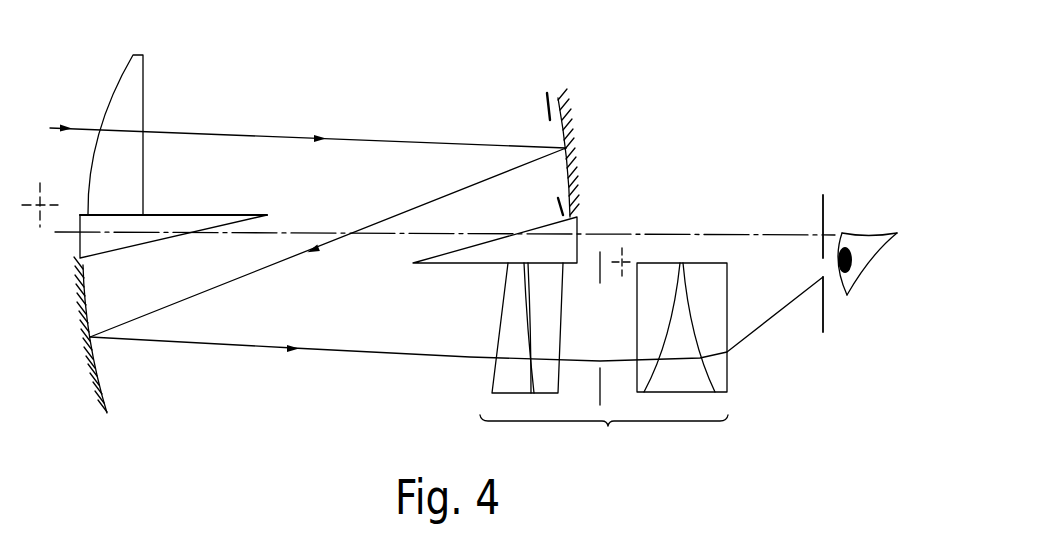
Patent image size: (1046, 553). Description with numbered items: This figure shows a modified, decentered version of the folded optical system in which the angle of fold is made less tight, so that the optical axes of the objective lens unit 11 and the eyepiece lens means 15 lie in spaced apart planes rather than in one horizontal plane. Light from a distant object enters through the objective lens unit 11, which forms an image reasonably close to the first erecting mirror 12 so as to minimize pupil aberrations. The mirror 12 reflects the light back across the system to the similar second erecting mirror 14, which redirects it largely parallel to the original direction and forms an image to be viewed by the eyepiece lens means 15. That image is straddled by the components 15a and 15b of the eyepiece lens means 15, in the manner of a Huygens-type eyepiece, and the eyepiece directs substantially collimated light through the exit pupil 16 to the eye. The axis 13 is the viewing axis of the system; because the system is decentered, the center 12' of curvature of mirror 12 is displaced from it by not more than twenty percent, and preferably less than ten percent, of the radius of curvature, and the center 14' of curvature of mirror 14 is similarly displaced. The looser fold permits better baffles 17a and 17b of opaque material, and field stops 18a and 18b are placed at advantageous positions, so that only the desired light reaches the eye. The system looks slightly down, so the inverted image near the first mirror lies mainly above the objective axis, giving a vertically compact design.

The objective lens unit 11 is at (127, 163).
The center of curvature of mirror 12 12' is at (51, 186).
The first erecting mirror 12 is at (582, 153).
The axis 13 is at (292, 232).
The second erecting mirror 14 is at (73, 335).
The center of curvature of mirror 14 14' is at (654, 231).
The eyepiece lens means 15 is at (604, 436).
The component of the eyepiece lens means 15a is at (555, 298).
The component of the eyepiece lens means 15b is at (720, 298).
The exit pupil 16 is at (820, 218).
The baffle 17a is at (152, 240).
The baffle 17b is at (500, 247).
The field stop 18a is at (547, 107).
The field stop 18b is at (598, 272).